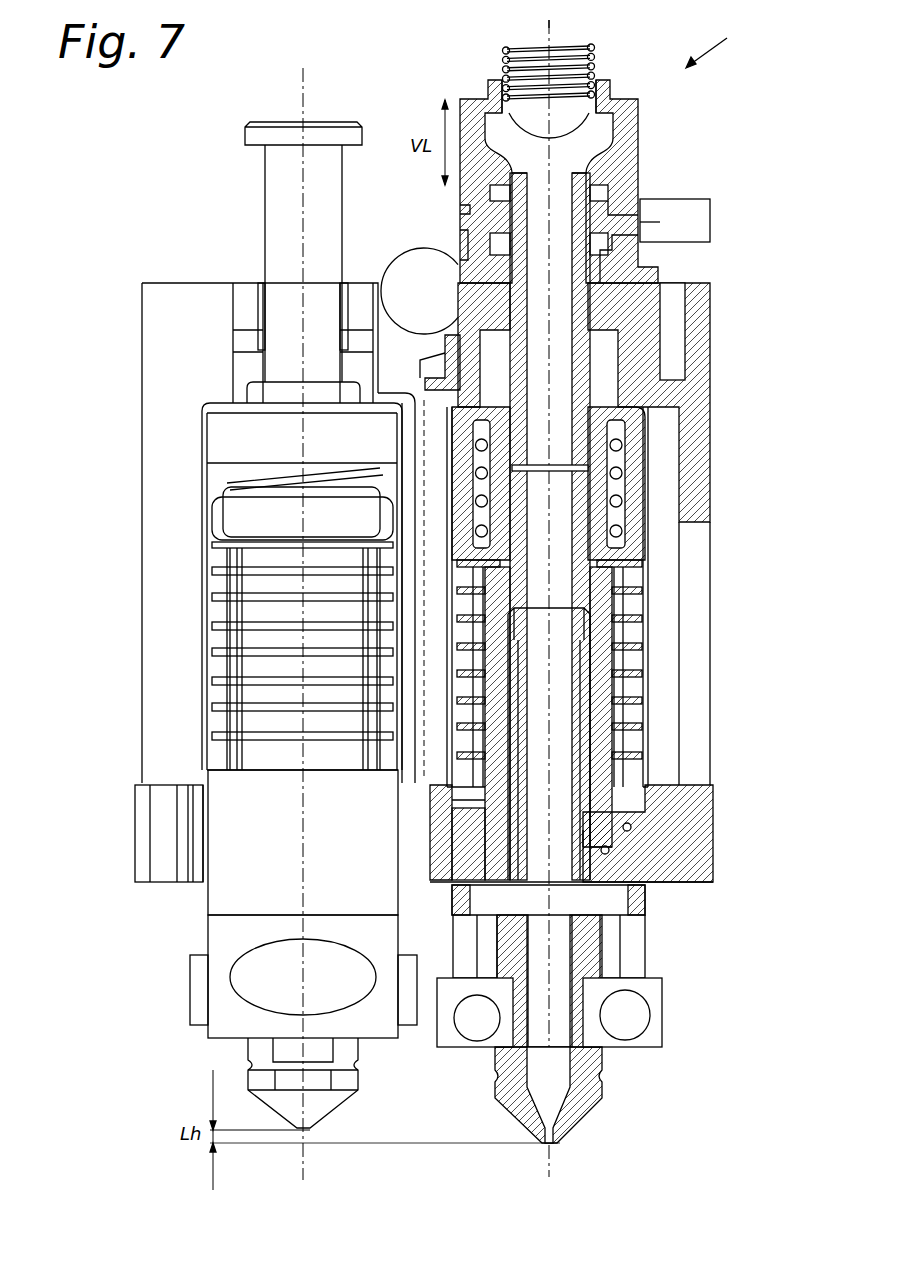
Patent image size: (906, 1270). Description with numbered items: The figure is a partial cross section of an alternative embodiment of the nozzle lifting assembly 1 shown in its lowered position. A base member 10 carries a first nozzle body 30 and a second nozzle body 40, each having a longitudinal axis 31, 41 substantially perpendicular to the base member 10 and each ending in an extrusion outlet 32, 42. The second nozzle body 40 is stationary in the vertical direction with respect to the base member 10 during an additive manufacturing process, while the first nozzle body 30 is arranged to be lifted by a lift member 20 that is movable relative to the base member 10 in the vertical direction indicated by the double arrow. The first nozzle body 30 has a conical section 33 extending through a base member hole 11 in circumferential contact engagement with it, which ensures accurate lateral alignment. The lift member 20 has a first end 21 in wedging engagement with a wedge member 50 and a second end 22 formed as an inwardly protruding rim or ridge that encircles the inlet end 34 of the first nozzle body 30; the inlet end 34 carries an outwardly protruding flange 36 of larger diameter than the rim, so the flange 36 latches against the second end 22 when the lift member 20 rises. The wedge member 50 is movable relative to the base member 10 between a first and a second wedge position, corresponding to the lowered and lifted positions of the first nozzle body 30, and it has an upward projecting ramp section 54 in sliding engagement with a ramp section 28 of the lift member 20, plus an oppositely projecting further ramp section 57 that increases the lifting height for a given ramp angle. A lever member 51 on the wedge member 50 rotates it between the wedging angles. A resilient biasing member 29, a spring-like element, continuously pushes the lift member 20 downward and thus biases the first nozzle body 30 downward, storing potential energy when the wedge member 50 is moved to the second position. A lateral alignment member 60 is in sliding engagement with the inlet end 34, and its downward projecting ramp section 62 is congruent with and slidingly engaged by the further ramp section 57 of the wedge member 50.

The nozzle lifting assembly 1 is at (715, 49).
The base member 10 is at (708, 462).
The base member hole 11 is at (632, 830).
The lift member 20 is at (640, 126).
The first end 21 is at (622, 197).
The second end 22 is at (600, 180).
The ramp section 28 is at (482, 201).
The resilient biasing member 29 is at (592, 47).
The first nozzle body 30 is at (590, 590).
The longitudinal axis 31 is at (549, 26).
The extrusion outlet 32 is at (552, 1143).
The conical section 33 is at (610, 850).
The inlet end 34 is at (518, 295).
The outwardly protruding flange 36 is at (500, 150).
The second nozzle body 40 is at (255, 612).
The longitudinal axis 41 is at (303, 92).
The extrusion outlet 42 is at (315, 1117).
The wedge member 50 is at (465, 225).
The lever member 51 is at (710, 208).
The ramp section 54 is at (470, 212).
The further ramp section 57 is at (468, 238).
The lateral alignment member 60 is at (622, 265).
The ramp section 62 is at (640, 232).